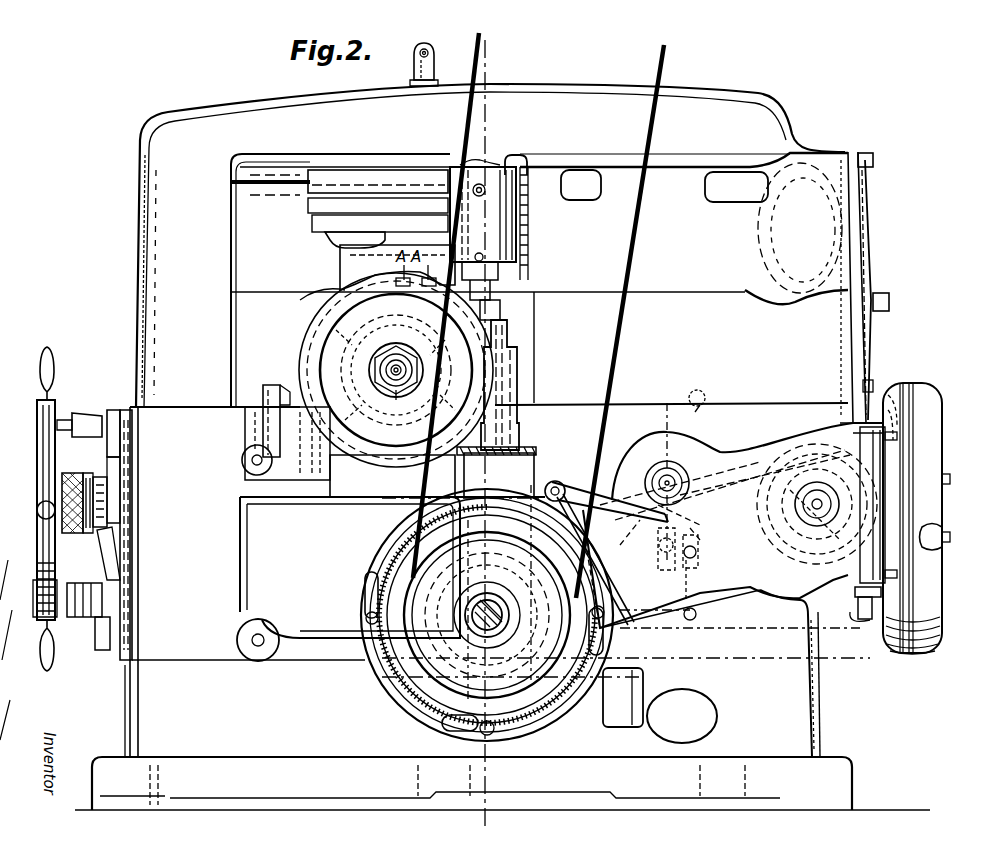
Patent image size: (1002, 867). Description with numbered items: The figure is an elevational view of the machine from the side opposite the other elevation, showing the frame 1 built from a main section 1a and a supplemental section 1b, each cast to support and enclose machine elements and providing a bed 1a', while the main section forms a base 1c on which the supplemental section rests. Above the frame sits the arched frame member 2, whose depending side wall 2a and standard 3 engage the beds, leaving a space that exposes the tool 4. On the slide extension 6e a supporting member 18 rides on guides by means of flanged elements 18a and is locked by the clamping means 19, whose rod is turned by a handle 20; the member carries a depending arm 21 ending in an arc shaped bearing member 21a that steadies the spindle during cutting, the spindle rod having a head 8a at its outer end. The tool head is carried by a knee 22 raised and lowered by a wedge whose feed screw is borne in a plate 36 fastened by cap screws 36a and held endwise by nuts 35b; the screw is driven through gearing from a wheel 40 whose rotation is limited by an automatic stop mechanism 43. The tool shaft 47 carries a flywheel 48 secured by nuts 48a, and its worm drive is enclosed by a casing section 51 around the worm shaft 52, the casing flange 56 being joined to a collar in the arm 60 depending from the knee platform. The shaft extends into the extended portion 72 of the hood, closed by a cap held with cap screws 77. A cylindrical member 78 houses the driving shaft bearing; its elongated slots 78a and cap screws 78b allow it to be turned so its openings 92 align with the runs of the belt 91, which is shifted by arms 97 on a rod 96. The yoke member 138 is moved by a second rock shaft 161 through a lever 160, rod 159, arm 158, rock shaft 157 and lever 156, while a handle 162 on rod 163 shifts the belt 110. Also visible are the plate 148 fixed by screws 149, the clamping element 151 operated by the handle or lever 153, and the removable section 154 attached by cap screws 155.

The frame 1 is at (502, 750).
The main section 1a is at (541, 627).
The bed 1a' is at (720, 409).
The supplemental section 1b is at (171, 410).
The base 1c is at (130, 738).
The frame member 2 is at (501, 248).
The side wall 2a is at (658, 400).
The standard 3 is at (142, 307).
The tool 4 is at (490, 72).
The extension 6e is at (378, 181).
The head 8a is at (878, 296).
The supporting member 18 is at (330, 237).
The flanged elements 18a is at (378, 215).
The clamping means 19 is at (429, 64).
The handle 20 is at (428, 50).
The depending arm 21 is at (397, 267).
The arc shaped bearing member 21a is at (356, 296).
The knee 22 is at (272, 390).
The nuts 35b is at (95, 585).
The plate 36 is at (100, 632).
The cap screws 36a is at (97, 478).
The wheel 40 is at (42, 462).
The automatic stop mechanism 43 is at (94, 524).
The shaft 47 is at (385, 393).
The flywheel 48 is at (306, 334).
The nuts 48a is at (399, 395).
The casing section 51 is at (516, 376).
The shaft 52 is at (492, 307).
The flange 56 is at (536, 452).
The arm 60 is at (437, 475).
The extended portion 72 is at (489, 233).
The cap screws 77 is at (518, 160).
The cylindrical member 78 is at (398, 650).
The elongated slots 78a is at (368, 600).
The cap screws 78b is at (366, 619).
The belt 91 is at (432, 360).
The openings 92 is at (398, 540).
The rod 96 is at (556, 481).
The arms 97 is at (596, 492).
The belt 110 is at (748, 486).
The yoke member 138 is at (785, 560).
The plate 148 is at (870, 247).
The screws 149 is at (868, 164).
The clamping element 151 is at (243, 470).
The handle or lever 153 is at (889, 392).
The removable section 154 is at (913, 518).
The cap screws 155 is at (934, 530).
The lever 156 is at (700, 403).
The rock shaft 157 is at (704, 547).
The arm 158 is at (690, 592).
The rod 159 is at (733, 612).
The lever 160 is at (872, 613).
The second rock shaft 161 is at (852, 612).
The handle 162 is at (660, 566).
The rod 163 is at (706, 524).